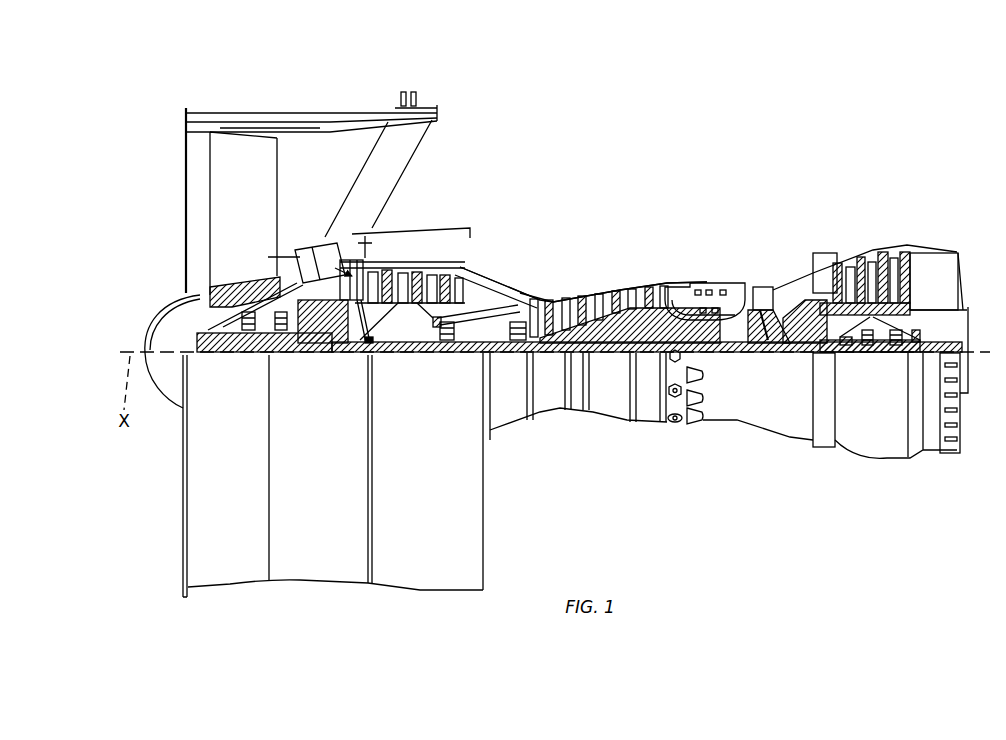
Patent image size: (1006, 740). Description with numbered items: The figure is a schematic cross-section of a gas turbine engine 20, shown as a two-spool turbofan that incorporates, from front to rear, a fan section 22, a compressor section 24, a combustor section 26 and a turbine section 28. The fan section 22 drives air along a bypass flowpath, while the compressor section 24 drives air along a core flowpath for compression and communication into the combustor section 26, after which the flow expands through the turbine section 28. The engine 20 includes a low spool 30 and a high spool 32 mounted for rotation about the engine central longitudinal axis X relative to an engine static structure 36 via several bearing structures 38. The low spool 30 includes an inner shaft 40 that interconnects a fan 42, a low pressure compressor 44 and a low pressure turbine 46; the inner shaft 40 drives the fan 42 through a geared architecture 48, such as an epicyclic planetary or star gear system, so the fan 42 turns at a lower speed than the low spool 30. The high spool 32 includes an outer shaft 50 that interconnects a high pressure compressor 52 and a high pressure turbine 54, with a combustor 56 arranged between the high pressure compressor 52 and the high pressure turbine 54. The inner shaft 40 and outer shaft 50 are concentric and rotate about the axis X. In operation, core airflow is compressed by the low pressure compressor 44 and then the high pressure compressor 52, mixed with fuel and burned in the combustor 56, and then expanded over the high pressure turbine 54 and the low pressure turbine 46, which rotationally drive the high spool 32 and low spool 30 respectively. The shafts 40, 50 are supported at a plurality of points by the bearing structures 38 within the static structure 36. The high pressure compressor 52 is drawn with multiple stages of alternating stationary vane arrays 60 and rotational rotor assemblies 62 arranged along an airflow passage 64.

The gas turbine engine 20 is at (790, 152).
The fan section 22 is at (370, 100).
The compressor section 24 is at (378, 205).
The combustor section 26 is at (668, 205).
The turbine section 28 is at (915, 205).
The low spool 30 is at (613, 357).
The high spool 32 is at (645, 328).
The engine static structure 36 is at (650, 425).
The bearing structures 38 is at (755, 262).
The inner shaft 40 is at (500, 358).
The fan 42 is at (247, 222).
The low pressure compressor 44 is at (430, 262).
The low pressure turbine 46 is at (860, 253).
The geared architecture 48 is at (333, 355).
The outer shaft 50 is at (735, 357).
The high pressure compressor 52 is at (600, 328).
The high pressure turbine 54 is at (760, 292).
The combustor 56 is at (702, 310).
The stationary vane arrays 60 is at (400, 273).
The rotor assemblies 62 is at (428, 275).
The airflow passage 64 is at (288, 258).